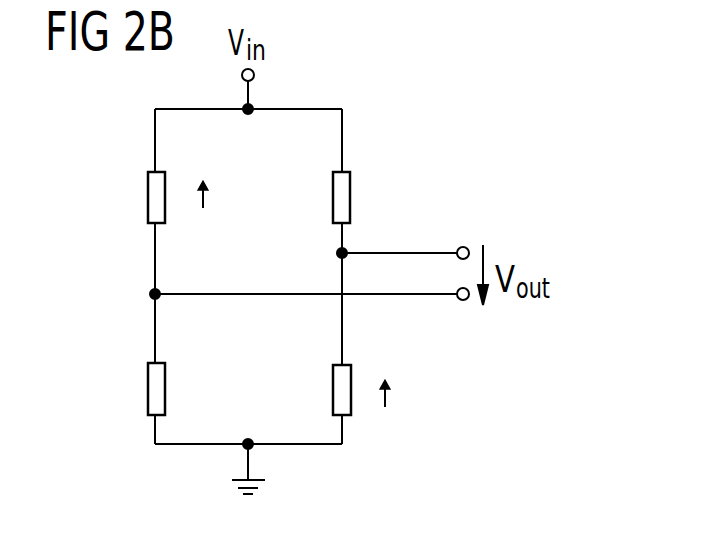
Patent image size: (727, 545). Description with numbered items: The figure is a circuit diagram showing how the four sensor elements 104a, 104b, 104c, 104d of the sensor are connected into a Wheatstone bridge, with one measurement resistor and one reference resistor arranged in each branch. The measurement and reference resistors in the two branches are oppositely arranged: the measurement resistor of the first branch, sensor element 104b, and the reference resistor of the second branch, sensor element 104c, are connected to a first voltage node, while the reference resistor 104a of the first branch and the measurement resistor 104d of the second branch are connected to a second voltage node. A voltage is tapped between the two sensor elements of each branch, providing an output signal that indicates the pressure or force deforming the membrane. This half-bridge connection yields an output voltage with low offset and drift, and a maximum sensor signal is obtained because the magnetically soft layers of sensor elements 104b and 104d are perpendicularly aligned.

The sensor element 104a is at (333, 201).
The sensor element 104b is at (333, 394).
The sensor element 104c is at (148, 393).
The sensor element 104d is at (148, 201).